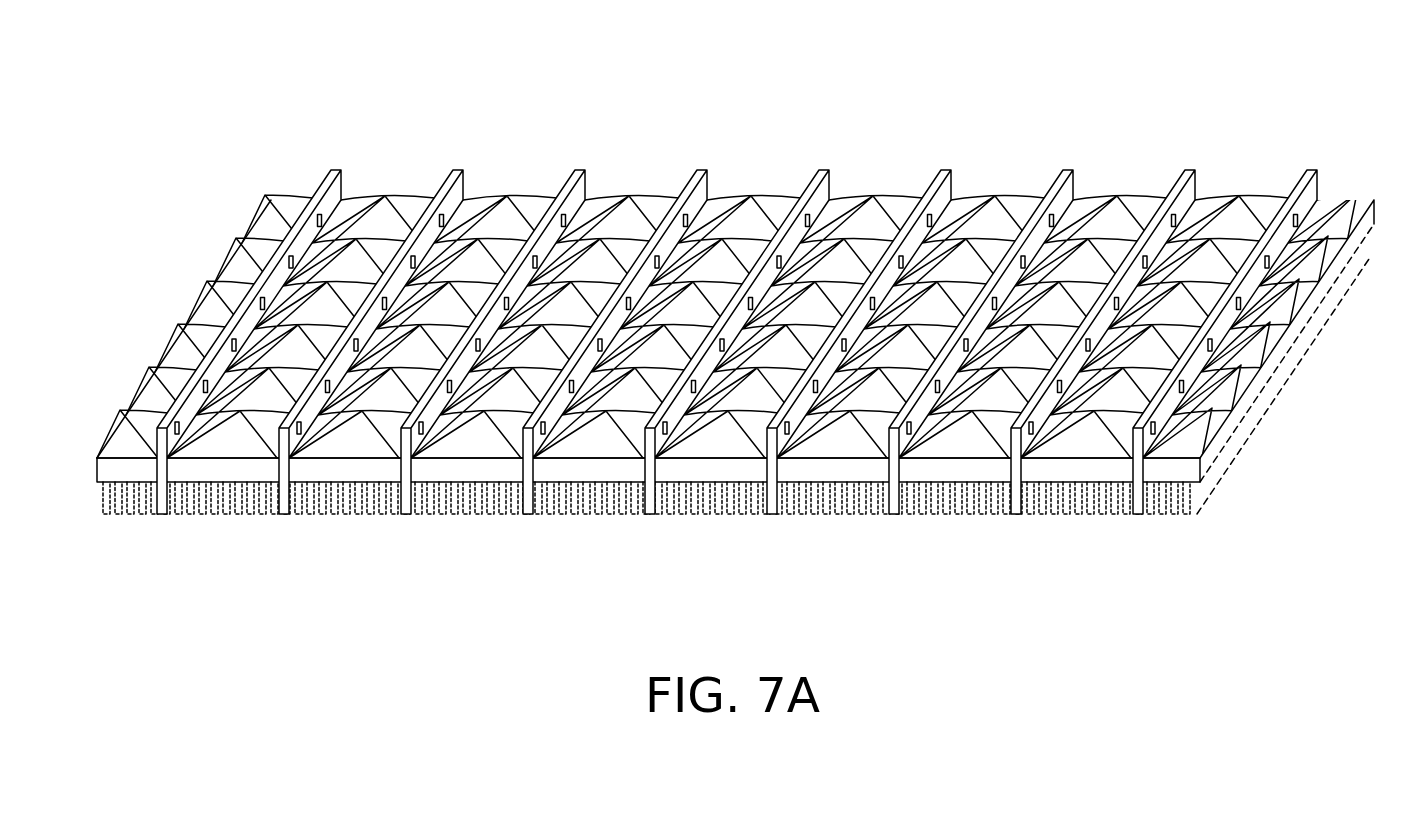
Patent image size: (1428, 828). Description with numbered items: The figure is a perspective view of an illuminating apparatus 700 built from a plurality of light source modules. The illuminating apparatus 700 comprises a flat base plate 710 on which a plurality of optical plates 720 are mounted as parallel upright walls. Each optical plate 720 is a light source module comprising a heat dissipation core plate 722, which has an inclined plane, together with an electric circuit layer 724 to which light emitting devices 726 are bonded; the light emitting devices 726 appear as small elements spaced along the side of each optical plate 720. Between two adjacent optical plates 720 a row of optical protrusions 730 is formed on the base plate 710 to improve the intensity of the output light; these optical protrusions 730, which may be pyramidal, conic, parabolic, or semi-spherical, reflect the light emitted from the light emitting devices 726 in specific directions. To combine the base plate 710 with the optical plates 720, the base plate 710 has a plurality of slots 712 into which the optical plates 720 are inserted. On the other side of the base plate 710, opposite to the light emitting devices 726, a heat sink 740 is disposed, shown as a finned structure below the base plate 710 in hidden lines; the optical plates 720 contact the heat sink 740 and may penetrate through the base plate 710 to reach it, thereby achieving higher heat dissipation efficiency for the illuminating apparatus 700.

The illuminating apparatus 700 is at (754, 345).
The base plate 710 is at (1143, 462).
The slots 712 is at (1134, 471).
The optical plate 720 is at (754, 272).
The heat dissipation core plate 722 is at (1190, 168).
The electric circuit layer 724 is at (1198, 182).
The light emitting devices 726 is at (1173, 222).
The optical protrusion 730 is at (1085, 443).
The heat sink 740 is at (981, 497).